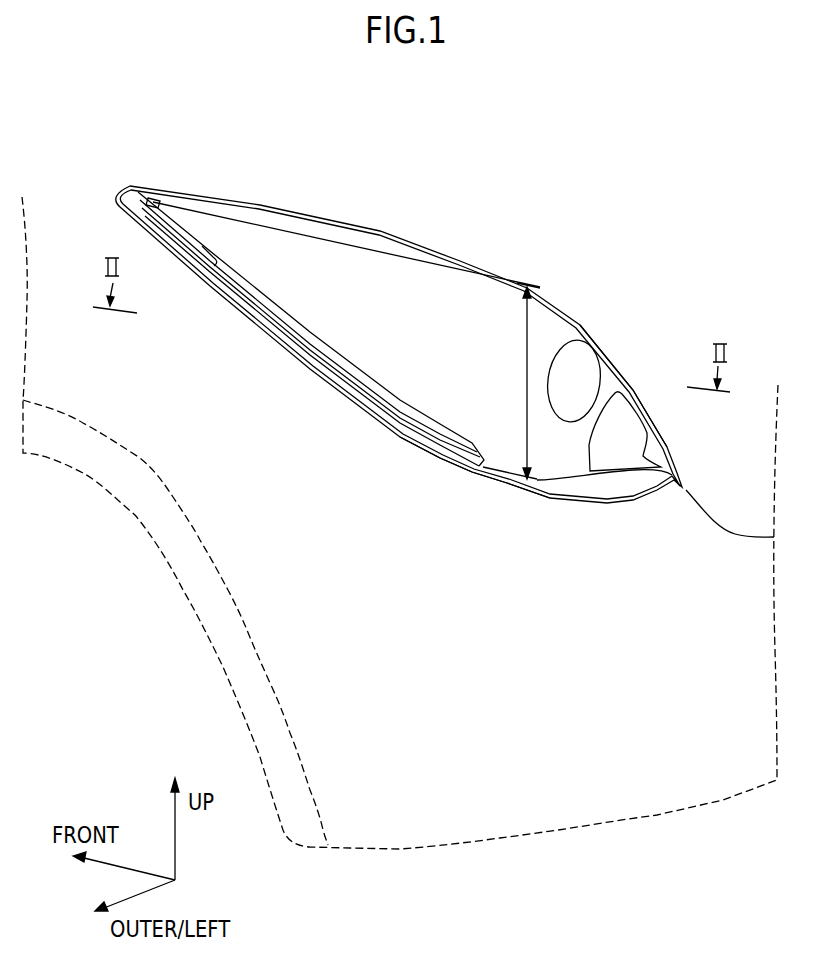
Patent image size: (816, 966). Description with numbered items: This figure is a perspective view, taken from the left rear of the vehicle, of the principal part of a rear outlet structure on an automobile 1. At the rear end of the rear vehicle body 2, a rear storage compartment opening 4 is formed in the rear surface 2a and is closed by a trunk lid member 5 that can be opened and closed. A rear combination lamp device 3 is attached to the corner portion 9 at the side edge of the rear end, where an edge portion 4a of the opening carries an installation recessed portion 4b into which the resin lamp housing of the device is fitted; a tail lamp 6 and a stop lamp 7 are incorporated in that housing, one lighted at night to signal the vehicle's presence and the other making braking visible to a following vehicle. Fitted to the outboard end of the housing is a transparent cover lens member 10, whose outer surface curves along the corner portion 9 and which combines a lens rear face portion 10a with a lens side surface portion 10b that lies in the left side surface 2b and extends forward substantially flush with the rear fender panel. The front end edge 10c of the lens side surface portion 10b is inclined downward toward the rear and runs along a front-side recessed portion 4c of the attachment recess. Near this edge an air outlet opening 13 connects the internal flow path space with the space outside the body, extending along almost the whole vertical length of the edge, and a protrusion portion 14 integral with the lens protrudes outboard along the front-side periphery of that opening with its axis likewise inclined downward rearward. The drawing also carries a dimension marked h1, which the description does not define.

The automobile 1 is at (237, 428).
The rear vehicle body 2 is at (419, 143).
The rear surface 2a is at (646, 298).
The left side surface 2b is at (318, 433).
The rear combination lamp device 3 is at (690, 424).
The rear storage compartment opening 4 is at (672, 450).
The edge portion 4a is at (600, 346).
The installation recessed portion 4b is at (283, 229).
The front-side recessed portion 4c is at (410, 420).
The trunk lid member 5 is at (632, 268).
The tail lamp 6 is at (572, 423).
The stop lamp 7 is at (617, 455).
The corner portion 9 is at (483, 512).
The cover lens member 10 is at (577, 196).
The lens rear face portion 10a is at (570, 335).
The lens side surface portion 10b is at (487, 293).
The front end edge 10c is at (355, 402).
The air outlet opening 13 is at (218, 262).
The protrusion portion 14 is at (175, 211).
The height h1 is at (526, 377).